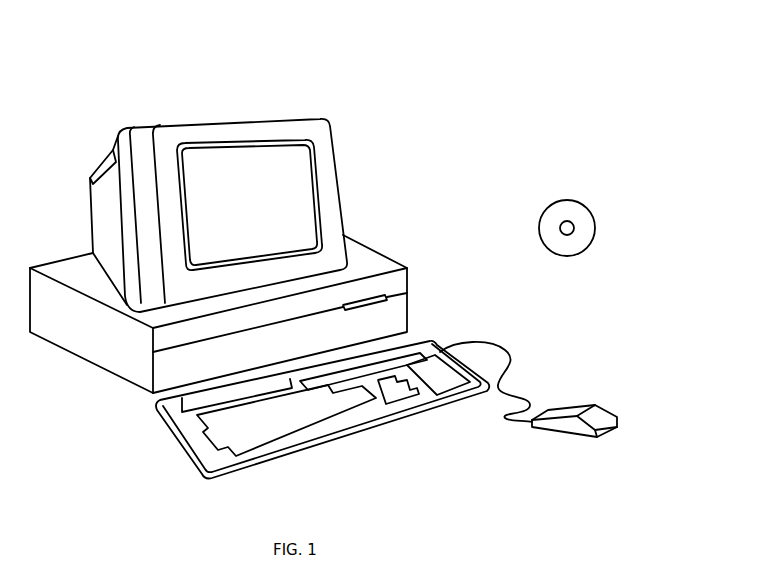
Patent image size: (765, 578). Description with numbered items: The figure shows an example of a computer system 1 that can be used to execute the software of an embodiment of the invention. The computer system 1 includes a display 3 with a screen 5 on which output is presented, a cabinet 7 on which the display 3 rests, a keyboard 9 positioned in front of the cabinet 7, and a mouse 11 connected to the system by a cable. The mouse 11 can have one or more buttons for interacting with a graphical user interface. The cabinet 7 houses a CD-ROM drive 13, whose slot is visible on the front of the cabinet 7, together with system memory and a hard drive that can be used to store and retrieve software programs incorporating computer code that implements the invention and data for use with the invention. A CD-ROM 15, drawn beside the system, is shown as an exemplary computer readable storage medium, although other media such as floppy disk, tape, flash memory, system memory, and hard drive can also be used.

The computer system 1 is at (506, 97).
The display 3 is at (241, 215).
The screen 5 is at (312, 168).
The cabinet 7 is at (240, 330).
The keyboard 9 is at (333, 443).
The mouse 11 is at (607, 408).
The CD-ROM drive 13 is at (387, 295).
The CD-ROM 15 is at (582, 200).